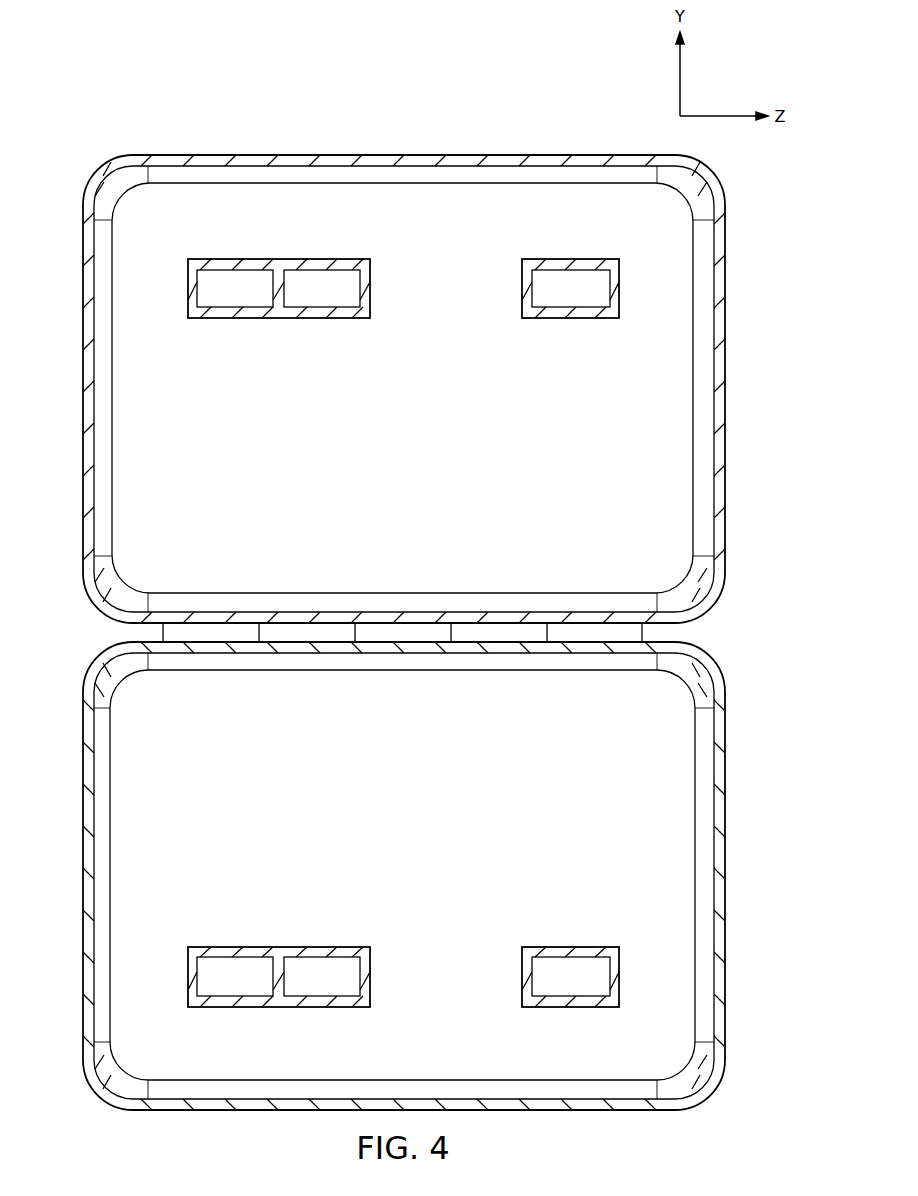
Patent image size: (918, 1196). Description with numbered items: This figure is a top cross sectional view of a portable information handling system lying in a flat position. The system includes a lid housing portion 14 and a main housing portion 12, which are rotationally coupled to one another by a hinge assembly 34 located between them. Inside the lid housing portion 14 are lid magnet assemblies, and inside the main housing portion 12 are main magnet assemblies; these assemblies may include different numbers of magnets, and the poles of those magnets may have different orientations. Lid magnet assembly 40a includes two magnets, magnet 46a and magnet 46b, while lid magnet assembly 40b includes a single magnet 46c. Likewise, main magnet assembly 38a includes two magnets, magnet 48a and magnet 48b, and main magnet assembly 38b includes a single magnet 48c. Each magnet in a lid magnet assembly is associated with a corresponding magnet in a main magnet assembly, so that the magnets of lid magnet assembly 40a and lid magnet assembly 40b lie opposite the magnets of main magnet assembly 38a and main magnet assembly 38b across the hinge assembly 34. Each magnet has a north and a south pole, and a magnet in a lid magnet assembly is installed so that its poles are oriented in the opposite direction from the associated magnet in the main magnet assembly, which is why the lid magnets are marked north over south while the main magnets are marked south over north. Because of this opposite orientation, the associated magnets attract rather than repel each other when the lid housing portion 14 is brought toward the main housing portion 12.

The main housing portion 12 is at (86, 853).
The lid housing portion 14 is at (88, 392).
The hinge assembly 34 is at (700, 635).
The main magnet assembly 38a is at (265, 955).
The main magnet assembly 38b is at (585, 955).
The lid magnet assembly 40a is at (265, 312).
The lid magnet assembly 40b is at (580, 312).
The magnet 46a is at (222, 270).
The magnet 46b is at (308, 270).
The magnet 46c is at (590, 270).
The magnet 48a is at (218, 997).
The magnet 48b is at (308, 997).
The magnet 48c is at (580, 997).